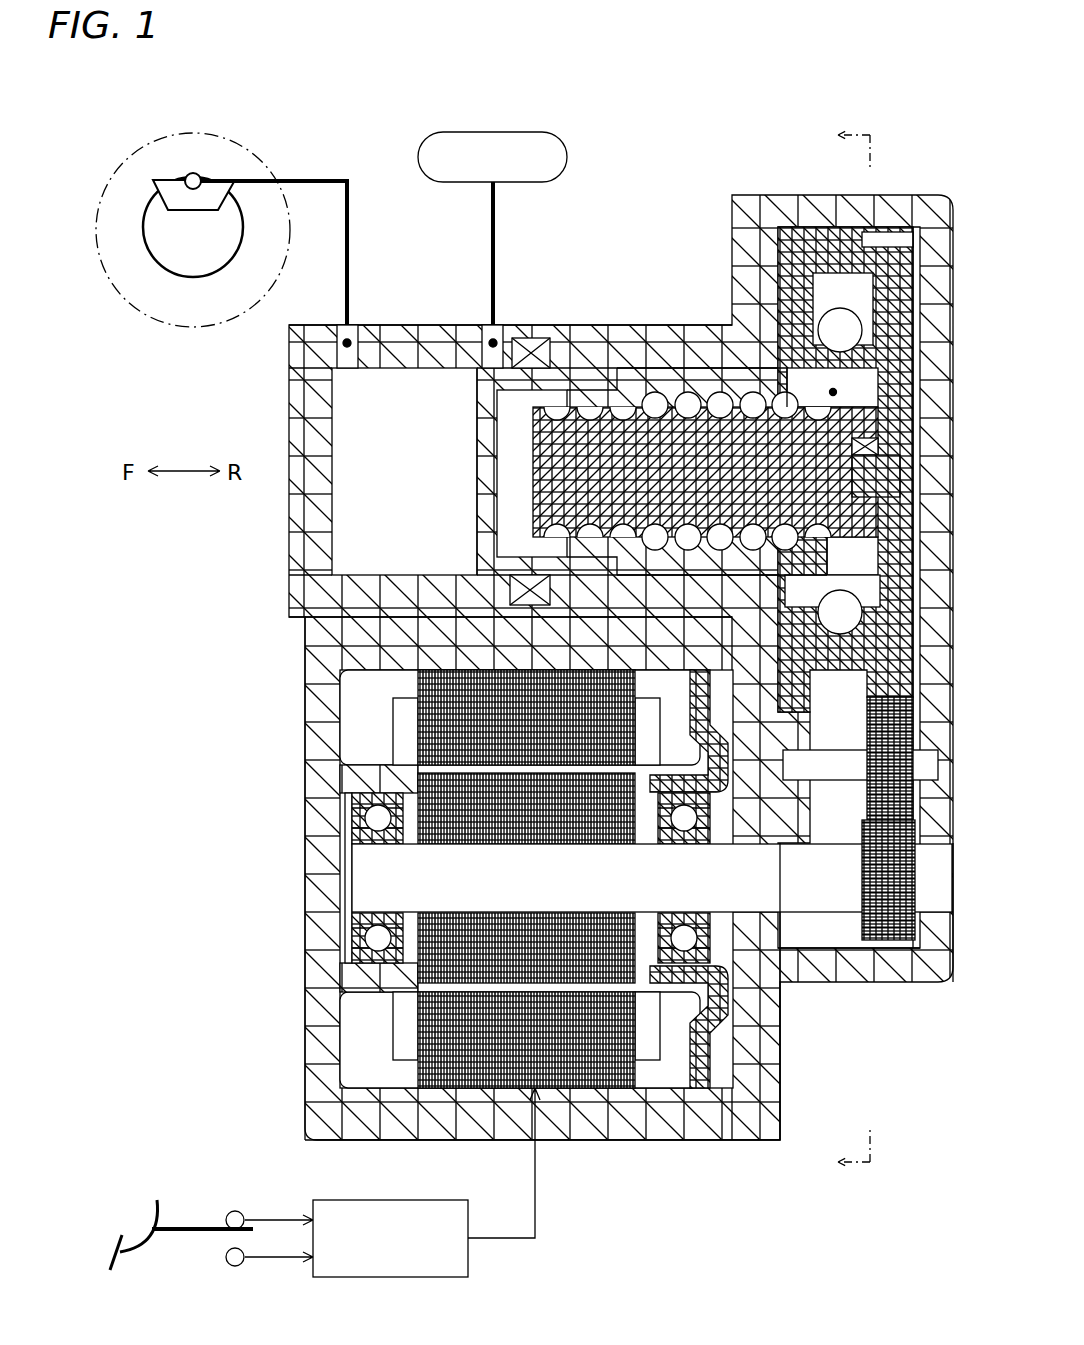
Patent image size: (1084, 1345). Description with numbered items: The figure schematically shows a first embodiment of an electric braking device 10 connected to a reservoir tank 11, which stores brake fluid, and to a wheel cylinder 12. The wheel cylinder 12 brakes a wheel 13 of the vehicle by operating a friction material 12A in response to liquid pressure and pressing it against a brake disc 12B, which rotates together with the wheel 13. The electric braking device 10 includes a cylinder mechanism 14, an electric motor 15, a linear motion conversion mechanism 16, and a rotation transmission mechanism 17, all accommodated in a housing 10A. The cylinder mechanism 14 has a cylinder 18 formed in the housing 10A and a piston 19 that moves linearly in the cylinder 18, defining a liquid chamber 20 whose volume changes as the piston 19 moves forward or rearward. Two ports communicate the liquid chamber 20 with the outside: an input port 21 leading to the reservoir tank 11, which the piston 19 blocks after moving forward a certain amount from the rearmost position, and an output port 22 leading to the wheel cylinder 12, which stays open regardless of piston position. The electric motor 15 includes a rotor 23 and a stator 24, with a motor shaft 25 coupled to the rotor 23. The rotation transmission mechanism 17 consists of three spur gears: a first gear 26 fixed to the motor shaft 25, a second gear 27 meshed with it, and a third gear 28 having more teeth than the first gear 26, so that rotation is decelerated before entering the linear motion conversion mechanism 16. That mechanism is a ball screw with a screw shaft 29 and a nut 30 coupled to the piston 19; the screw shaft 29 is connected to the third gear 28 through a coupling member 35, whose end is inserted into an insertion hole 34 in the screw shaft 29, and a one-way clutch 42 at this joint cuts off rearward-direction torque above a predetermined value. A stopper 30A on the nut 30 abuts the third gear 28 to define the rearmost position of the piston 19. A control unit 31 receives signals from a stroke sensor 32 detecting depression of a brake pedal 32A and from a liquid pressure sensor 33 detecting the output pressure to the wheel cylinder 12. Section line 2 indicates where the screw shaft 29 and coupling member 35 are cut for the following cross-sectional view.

The section line 2- 2 is at (837, 650).
The electric braking device 10 is at (225, 1003).
The housing 10A is at (781, 1060).
The reservoir tank 11 is at (572, 155).
The wheel cylinder 12 is at (187, 176).
The friction material 12A is at (165, 183).
The brake disc 12B is at (168, 245).
The wheel 13 is at (205, 327).
The cylinder mechanism 14 is at (410, 312).
The electric motor 15 is at (355, 1056).
The linear motion conversion mechanism 16 is at (686, 578).
The rotation transmission mechanism 17 is at (860, 940).
The cylinder 18 is at (420, 578).
The piston 19 is at (477, 436).
The liquid chamber 20 is at (421, 478).
The input port 21 is at (489, 340).
The output port 22 is at (343, 343).
The rotor 23 is at (416, 928).
The stator 24 is at (415, 718).
The motor shaft 25 is at (548, 892).
The first gear 26 is at (866, 862).
The second gear 27 is at (866, 802).
The third gear 28 is at (852, 698).
The screw shaft 29 is at (652, 396).
The nut 30 is at (700, 368).
The stopper 30A is at (833, 390).
The control unit 31 is at (470, 1262).
The stroke sensor 32 is at (235, 1211).
The brake pedal 32A is at (121, 1242).
The liquid pressure sensor 33 is at (226, 1258).
The insertion hole 34 is at (858, 500).
The coupling member 35 is at (850, 470).
The one-way clutch 42 is at (855, 445).